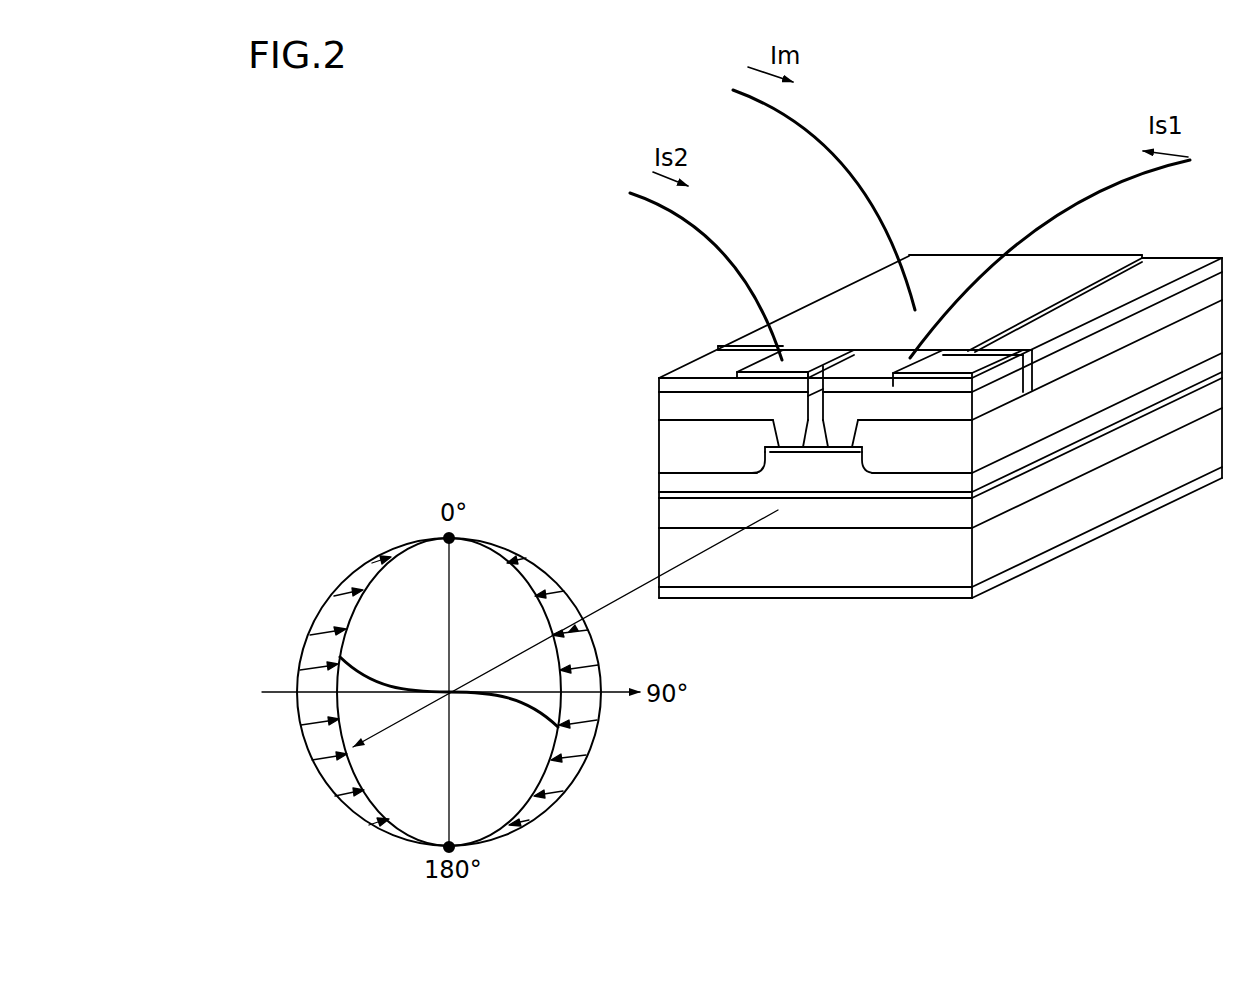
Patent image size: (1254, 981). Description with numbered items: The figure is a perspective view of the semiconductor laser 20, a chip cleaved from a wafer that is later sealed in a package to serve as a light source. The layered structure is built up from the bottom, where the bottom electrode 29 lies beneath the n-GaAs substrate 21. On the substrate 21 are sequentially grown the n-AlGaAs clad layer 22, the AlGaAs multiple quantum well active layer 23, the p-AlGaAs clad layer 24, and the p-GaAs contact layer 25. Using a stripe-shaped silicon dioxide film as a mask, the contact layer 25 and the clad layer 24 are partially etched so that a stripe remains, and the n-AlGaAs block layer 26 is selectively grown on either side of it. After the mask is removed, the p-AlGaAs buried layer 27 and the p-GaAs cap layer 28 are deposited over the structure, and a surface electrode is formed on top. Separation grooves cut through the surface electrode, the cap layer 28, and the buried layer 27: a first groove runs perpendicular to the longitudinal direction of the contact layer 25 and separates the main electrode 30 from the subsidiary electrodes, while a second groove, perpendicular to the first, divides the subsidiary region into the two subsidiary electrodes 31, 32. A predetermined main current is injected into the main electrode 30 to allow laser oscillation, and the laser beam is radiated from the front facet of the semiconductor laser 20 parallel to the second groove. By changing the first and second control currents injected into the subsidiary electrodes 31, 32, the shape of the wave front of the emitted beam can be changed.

The semiconductor laser 20 is at (988, 200).
The n-GaAs substrate 21 is at (763, 578).
The n-AlGaAs clad layer 22 is at (662, 514).
The AlGaAs multiple quantum well active layer 23 is at (662, 496).
The p-AlGaAs clad layer 24 is at (662, 484).
The p-GaAs contact layer 25 is at (866, 449).
The n-AlGaAs block layer 26 is at (807, 434).
The p-AlGaAs buried layer 27 is at (665, 410).
The p-GaAs cap layer 28 is at (662, 380).
The bottom electrode 29 is at (906, 597).
The main electrode 30 is at (935, 300).
The subsidiary electrode 31 is at (880, 352).
The subsidiary electrode 32 is at (763, 366).